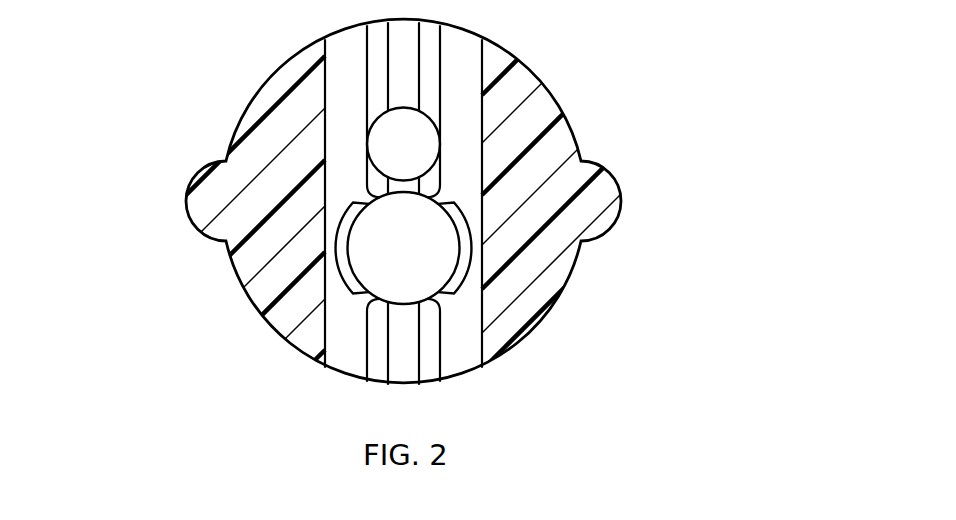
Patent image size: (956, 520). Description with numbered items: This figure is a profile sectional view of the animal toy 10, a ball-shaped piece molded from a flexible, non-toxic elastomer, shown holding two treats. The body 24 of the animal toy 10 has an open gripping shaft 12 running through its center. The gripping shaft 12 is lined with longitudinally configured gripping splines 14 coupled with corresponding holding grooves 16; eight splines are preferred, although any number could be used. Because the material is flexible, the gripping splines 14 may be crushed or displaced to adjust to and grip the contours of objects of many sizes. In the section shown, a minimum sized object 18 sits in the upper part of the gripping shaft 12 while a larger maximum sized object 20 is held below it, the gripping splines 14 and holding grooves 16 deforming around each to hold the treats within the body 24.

The animal toy 10 is at (250, 88).
The gripping shaft 12 is at (410, 49).
The gripping splines 14 is at (468, 247).
The holding grooves 16 is at (405, 368).
The minimum sized object 18 is at (440, 168).
The maximum sized object 20 is at (450, 203).
The body 24 is at (553, 318).